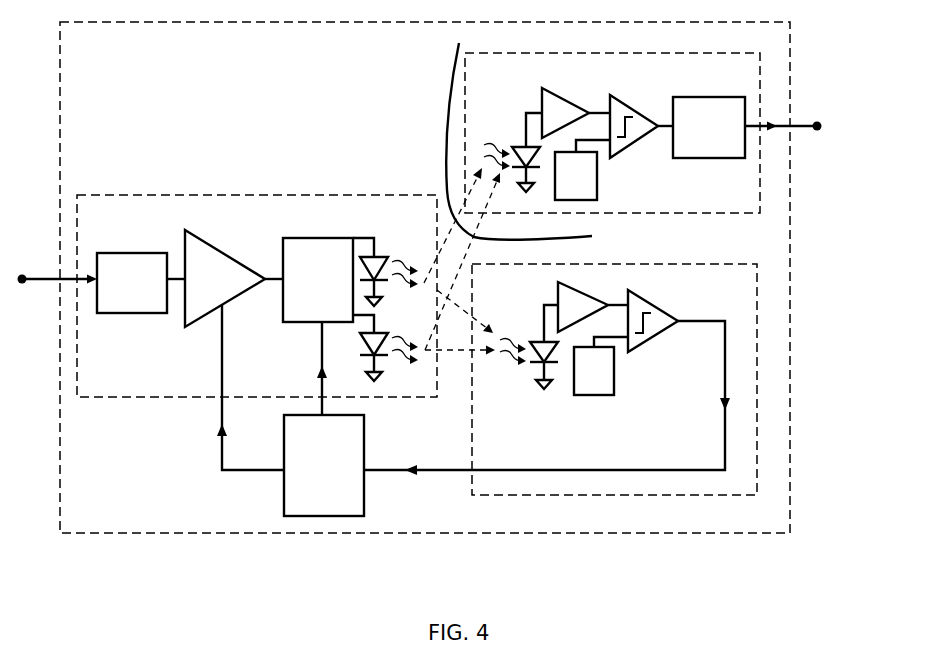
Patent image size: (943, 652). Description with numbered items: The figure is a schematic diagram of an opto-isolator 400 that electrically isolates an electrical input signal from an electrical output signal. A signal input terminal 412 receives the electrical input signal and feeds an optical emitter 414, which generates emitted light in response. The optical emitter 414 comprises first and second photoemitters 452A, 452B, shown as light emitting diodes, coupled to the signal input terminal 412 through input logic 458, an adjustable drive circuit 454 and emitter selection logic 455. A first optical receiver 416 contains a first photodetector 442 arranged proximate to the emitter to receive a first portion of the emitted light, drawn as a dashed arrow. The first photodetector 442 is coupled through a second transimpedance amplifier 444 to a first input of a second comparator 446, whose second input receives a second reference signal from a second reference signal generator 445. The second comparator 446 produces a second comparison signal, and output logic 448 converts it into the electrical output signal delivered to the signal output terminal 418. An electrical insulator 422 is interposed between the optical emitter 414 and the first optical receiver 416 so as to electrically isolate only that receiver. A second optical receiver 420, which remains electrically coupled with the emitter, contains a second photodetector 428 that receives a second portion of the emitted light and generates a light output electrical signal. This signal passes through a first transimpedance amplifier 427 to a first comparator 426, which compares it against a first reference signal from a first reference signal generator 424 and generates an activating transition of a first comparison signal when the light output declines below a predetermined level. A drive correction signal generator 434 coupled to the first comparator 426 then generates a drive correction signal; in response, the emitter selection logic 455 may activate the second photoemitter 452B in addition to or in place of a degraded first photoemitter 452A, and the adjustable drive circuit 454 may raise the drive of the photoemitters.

The opto-isolator 400 is at (110, 100).
The signal input terminal 412 is at (24, 285).
The optical emitter 414 is at (312, 194).
The first optical receiver 416 is at (661, 216).
The signal output terminal 418 is at (816, 132).
The second optical receiver 420 is at (472, 418).
The electrical insulator 422 is at (452, 78).
The first reference signal generator 424 is at (618, 389).
The first comparator 426 is at (643, 301).
The first transimpedance amplifier 427 is at (577, 295).
The second photodetector 428 is at (541, 333).
The drive correction signal generator 434 is at (284, 442).
The first photodetector 442 is at (523, 128).
The second transimpedance amplifier 444 is at (560, 100).
The second reference signal generator 445 is at (598, 197).
The second comparator 446 is at (624, 103).
The output logic 448 is at (714, 99).
The first photoemitter 452A is at (385, 254).
The second photoemitter 452B is at (385, 331).
The adjustable drive circuit 454 is at (224, 256).
The emitter selection logic 455 is at (340, 236).
The input logic 458 is at (133, 253).